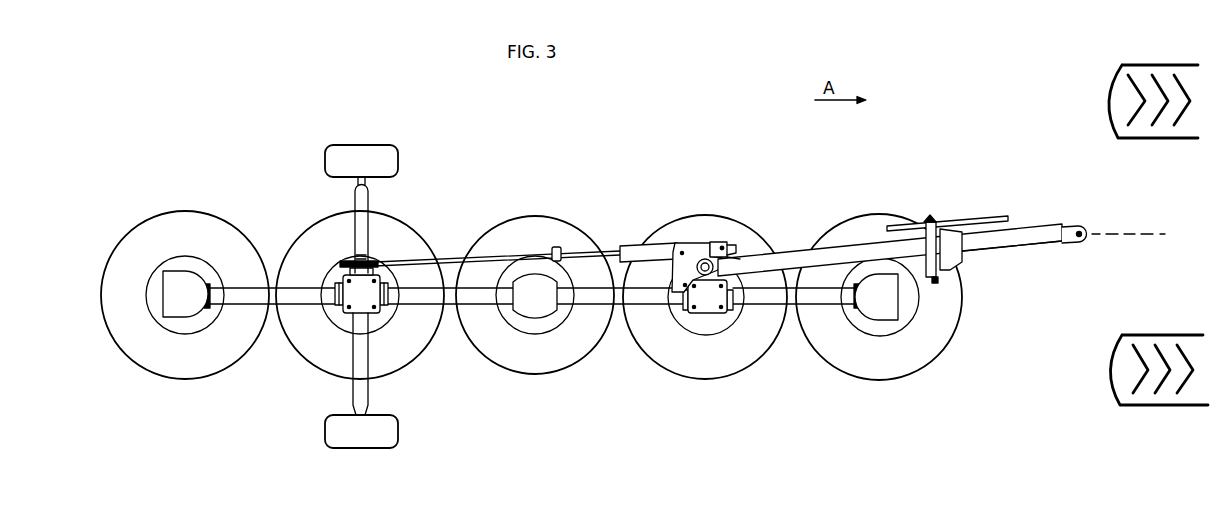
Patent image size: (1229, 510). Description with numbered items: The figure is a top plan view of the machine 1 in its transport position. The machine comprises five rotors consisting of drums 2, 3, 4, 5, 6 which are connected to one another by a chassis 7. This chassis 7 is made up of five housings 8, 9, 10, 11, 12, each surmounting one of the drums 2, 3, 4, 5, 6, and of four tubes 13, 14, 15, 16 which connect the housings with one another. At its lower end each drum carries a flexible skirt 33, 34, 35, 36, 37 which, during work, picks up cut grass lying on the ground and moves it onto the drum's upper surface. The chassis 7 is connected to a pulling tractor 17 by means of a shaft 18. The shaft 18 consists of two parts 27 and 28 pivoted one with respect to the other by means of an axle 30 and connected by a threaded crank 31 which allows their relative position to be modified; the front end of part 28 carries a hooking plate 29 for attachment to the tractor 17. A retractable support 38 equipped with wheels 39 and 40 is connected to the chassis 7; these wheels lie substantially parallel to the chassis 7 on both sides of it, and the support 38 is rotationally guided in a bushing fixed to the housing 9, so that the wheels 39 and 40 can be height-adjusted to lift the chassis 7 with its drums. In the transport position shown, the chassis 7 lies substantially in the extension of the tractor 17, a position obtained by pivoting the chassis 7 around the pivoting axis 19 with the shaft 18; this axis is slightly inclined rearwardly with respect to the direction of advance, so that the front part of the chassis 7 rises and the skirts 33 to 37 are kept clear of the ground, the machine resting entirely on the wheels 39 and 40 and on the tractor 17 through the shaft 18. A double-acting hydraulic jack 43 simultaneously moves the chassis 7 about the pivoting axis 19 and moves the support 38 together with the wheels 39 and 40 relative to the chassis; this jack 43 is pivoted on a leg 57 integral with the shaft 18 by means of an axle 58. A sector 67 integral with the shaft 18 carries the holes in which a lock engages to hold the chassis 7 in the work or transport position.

The transport device 1 is at (208, 203).
The drum 2 is at (172, 256).
The drum 3 is at (336, 272).
The drum 4 is at (541, 333).
The drum 5 is at (717, 338).
The drum 6 is at (883, 336).
The chassis 7 is at (832, 314).
The housing 8 is at (168, 314).
The housing 9 is at (348, 313).
The housing 10 is at (521, 318).
The housing 11 is at (703, 319).
The housing 12 is at (894, 313).
The tube 13 is at (260, 300).
The tube 14 is at (437, 332).
The tube 15 is at (600, 300).
The tube 16 is at (789, 308).
The pulling tractor 17 is at (1120, 365).
The shaft 18 is at (1000, 257).
The pivoting axis 19 is at (696, 246).
The part of shaft 27 is at (798, 258).
The part of shaft 28 is at (1030, 232).
The hooking plate 29 is at (1074, 241).
The axle 30 is at (930, 216).
The threaded crank 31 is at (960, 221).
The flexible skirt 33 is at (186, 365).
The flexible skirt 34 is at (393, 363).
The flexible skirt 35 is at (534, 220).
The flexible skirt 36 is at (680, 228).
The flexible skirt 37 is at (862, 222).
The retractable support 38 is at (366, 202).
The wheel 39 is at (386, 437).
The wheel 40 is at (386, 160).
The hydraulic jack 43 is at (612, 247).
The leg 57 is at (736, 251).
The axle 58 is at (727, 249).
The sector 67 is at (700, 267).